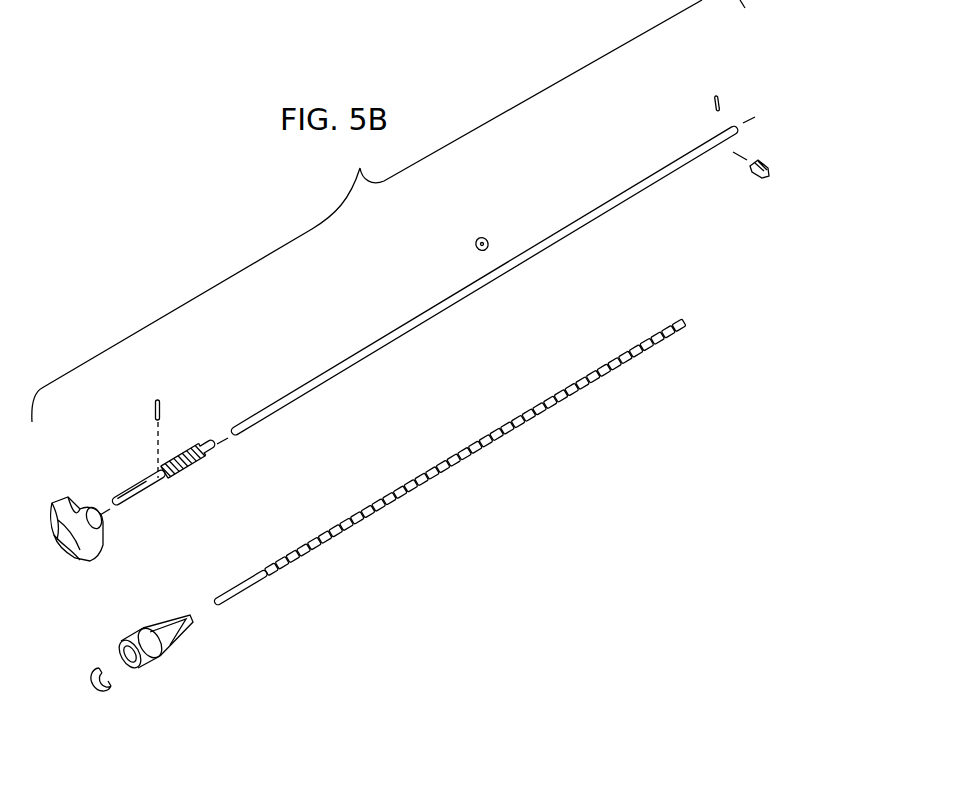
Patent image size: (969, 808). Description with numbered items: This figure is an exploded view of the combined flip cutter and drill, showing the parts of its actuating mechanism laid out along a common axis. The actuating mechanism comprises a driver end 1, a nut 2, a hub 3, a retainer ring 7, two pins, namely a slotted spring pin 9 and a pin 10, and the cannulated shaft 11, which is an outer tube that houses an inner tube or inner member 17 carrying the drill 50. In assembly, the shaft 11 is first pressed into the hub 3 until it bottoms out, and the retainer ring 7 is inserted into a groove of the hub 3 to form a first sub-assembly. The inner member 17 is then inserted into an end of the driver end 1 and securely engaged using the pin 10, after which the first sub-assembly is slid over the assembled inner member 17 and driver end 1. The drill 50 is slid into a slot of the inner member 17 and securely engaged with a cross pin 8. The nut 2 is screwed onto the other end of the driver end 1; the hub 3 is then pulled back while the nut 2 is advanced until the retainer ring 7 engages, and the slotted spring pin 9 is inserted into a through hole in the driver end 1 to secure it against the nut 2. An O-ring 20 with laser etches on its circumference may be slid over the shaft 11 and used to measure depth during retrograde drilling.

The driver end 1 is at (122, 512).
The nut 2 is at (68, 493).
The hub 3 is at (163, 657).
The retainer ring 7 is at (92, 678).
The cross pin 8 is at (715, 92).
The slotted spring pin 9 is at (158, 393).
The pin 10 is at (218, 385).
The shaft 11 is at (690, 320).
The inner member 17 is at (613, 198).
The O-ring 20 is at (467, 222).
The drill 50 is at (763, 160).